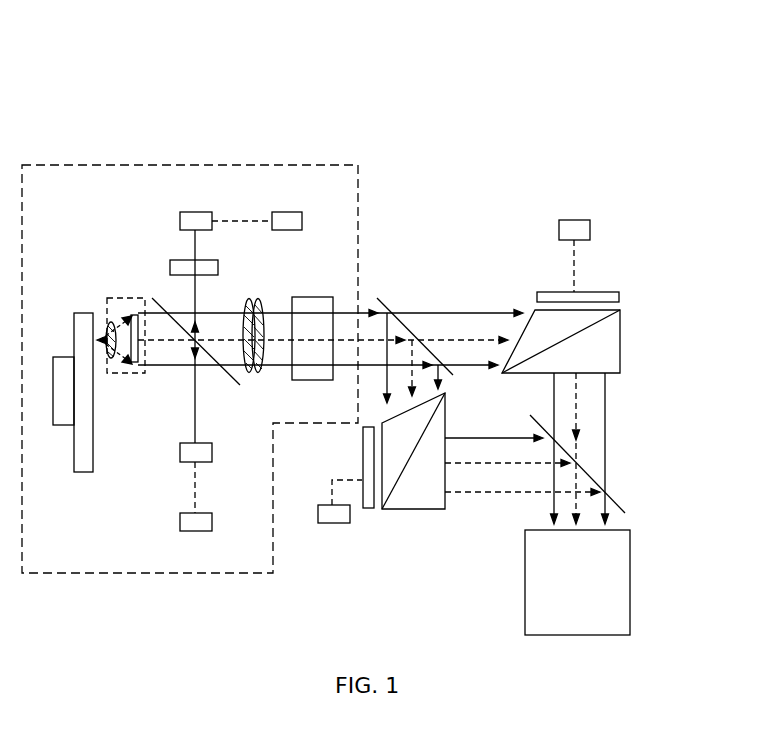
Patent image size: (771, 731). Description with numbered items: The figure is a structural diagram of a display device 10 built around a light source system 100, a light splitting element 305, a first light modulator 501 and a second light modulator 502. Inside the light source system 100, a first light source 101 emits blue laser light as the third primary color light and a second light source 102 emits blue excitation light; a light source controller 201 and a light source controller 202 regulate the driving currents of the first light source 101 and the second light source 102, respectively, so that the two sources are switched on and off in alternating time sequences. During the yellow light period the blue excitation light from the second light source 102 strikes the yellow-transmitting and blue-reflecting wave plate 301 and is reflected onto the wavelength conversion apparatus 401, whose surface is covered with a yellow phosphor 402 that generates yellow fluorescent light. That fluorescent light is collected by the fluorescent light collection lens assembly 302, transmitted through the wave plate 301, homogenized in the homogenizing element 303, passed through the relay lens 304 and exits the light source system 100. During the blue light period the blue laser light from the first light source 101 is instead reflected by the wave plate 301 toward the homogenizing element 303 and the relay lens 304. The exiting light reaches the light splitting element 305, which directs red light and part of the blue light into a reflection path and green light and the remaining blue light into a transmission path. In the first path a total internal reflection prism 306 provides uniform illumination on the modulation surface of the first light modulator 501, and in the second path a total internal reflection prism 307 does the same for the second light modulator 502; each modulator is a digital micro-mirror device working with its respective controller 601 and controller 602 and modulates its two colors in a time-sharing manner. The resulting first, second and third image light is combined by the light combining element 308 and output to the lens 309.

The display device 10 is at (108, 40).
The light source system 100 is at (228, 165).
The first light source 101 is at (188, 211).
The second light source 102 is at (180, 450).
The light source controller 201 is at (278, 212).
The light source controller 202 is at (180, 520).
The yellow-transmitting and blue-reflecting wave plate 301 is at (180, 260).
The fluorescent light collection lens assembly 302 is at (132, 298).
The homogenizing element 303 is at (251, 299).
The relay lens 304 is at (312, 307).
The light splitting element 305 is at (383, 303).
The total internal reflection prism 306 is at (420, 502).
The total internal reflection prism 307 is at (605, 350).
The light combining element 308 is at (620, 500).
The lens 309 is at (600, 590).
The wavelength conversion apparatus 401 is at (76, 447).
The yellow phosphor 402 is at (95, 358).
The first light modulator 501 is at (363, 453).
The second light modulator 502 is at (590, 292).
The controller 601 is at (333, 525).
The controller 602 is at (567, 218).